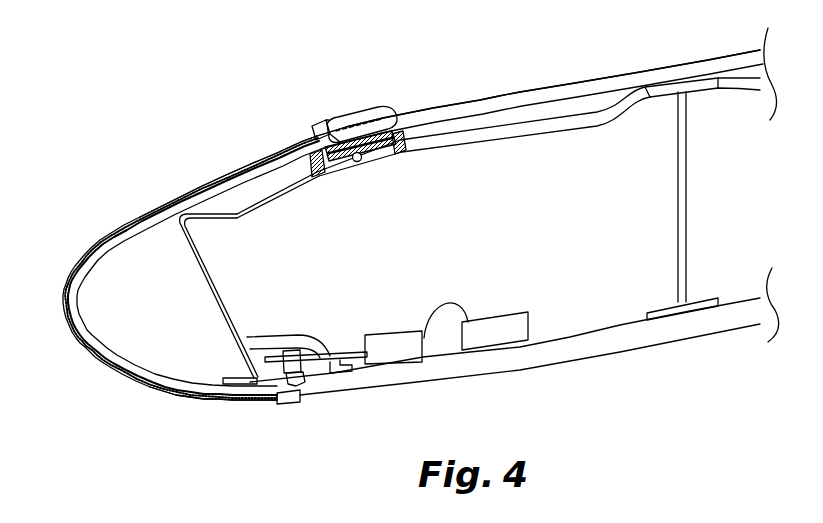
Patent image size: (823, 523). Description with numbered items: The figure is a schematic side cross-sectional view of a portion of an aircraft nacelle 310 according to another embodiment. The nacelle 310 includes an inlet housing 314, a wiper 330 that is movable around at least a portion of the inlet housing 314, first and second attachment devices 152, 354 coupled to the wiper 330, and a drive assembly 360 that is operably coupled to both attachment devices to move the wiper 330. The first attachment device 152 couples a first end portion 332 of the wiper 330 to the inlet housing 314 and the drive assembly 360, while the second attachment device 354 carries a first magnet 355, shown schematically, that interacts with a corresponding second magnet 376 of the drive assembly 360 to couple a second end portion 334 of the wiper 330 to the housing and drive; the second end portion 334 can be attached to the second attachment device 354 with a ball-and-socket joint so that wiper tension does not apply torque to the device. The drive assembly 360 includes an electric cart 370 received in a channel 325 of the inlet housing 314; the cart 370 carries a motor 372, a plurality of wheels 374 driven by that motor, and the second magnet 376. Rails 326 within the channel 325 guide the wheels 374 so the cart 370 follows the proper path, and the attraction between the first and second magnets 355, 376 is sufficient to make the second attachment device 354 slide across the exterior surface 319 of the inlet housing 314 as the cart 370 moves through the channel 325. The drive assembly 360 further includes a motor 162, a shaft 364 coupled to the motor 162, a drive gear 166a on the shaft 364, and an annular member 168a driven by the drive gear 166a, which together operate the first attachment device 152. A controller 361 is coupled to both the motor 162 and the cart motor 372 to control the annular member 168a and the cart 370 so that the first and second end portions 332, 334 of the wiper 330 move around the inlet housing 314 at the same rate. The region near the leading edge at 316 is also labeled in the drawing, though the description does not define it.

The aircraft nacelle 310 is at (266, 72).
The inlet housing 314 is at (517, 92).
The leading edge 316 is at (133, 383).
The exterior surface 319 is at (250, 165).
The channel 325 is at (412, 150).
The rails 326 is at (312, 175).
The wiper 330 is at (62, 300).
The first end portion 332 is at (257, 402).
The second end portion 334 is at (300, 142).
The second attachment device 354 is at (333, 122).
The first magnet 355 is at (360, 115).
The drive assembly 360 is at (447, 173).
The controller 361 is at (507, 335).
The shaft 364 is at (348, 355).
The electric cart 370 is at (338, 189).
The motor 372 is at (357, 163).
The wheels 374 is at (328, 137).
The second magnet 376 is at (375, 120).
The motor 162 is at (397, 353).
The first attachment device 152 is at (286, 405).
The drive gear 166a is at (288, 352).
The annular member 168a is at (302, 383).